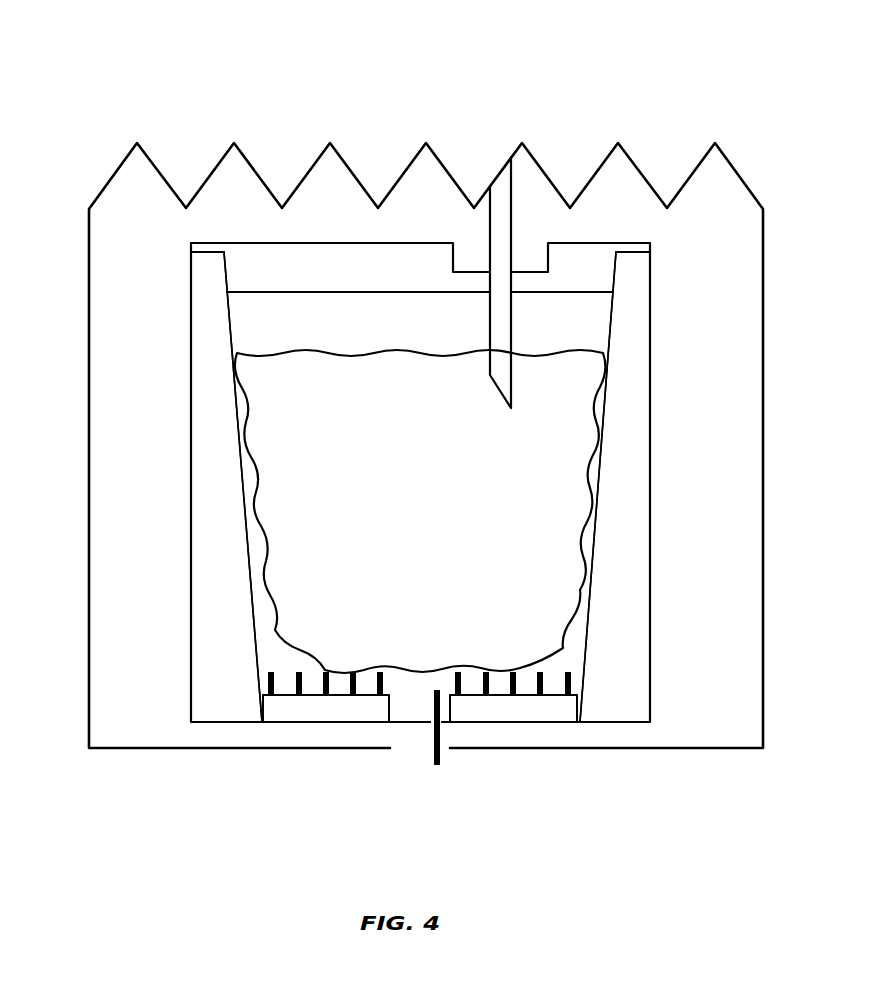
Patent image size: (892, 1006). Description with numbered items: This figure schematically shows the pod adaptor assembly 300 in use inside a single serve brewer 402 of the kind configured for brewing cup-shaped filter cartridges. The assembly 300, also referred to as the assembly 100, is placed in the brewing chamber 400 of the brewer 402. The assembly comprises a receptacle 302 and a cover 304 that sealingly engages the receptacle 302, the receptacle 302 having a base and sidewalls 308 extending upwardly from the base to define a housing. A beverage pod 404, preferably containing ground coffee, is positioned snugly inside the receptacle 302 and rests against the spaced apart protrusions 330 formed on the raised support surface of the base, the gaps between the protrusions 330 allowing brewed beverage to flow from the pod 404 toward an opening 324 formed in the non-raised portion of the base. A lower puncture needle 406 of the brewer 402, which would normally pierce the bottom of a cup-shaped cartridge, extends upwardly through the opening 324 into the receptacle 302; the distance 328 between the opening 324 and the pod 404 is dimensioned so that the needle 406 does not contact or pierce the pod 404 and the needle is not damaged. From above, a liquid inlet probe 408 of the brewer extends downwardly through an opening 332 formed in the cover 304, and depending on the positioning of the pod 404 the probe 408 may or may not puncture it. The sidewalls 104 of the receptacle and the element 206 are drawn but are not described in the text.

The single serve brewer 402 is at (243, 57).
The liquid inlet probe 408 is at (505, 230).
The cover 304 is at (237, 243).
The crucible side wall 104 is at (598, 273).
The sidewalls 308 is at (613, 323).
The opening 332 is at (486, 297).
The pod adaptor assembly 300 is at (525, 452).
The receptacle 302 is at (282, 442).
The brewing chamber 400 is at (215, 552).
The beverage pod 404 is at (420, 593).
The opening 324 is at (443, 720).
The protrusions 330 is at (550, 682).
The distance 328 is at (402, 708).
The lower puncture needle 406 is at (443, 757).
The assembly 100 is at (323, 723).
The heater base plate 206 is at (540, 723).